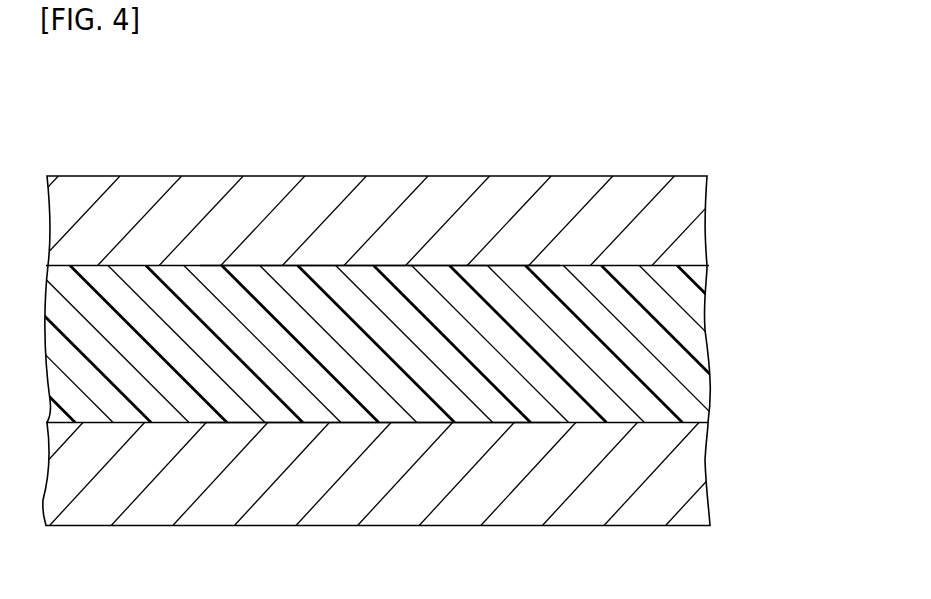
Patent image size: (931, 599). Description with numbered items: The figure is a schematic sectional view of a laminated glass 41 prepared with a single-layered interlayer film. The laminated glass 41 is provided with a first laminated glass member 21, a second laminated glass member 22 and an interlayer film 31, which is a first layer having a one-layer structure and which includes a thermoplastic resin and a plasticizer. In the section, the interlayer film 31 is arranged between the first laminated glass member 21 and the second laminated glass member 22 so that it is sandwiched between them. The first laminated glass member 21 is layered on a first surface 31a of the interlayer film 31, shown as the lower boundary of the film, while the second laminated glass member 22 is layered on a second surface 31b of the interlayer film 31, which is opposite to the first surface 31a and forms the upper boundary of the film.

The laminated glass 41 is at (186, 71).
The second laminated glass member 22 is at (710, 211).
The first laminated glass member 21 is at (708, 457).
The interlayer film 31 is at (292, 263).
The second surface 31b is at (390, 264).
The first surface 31a is at (392, 423).